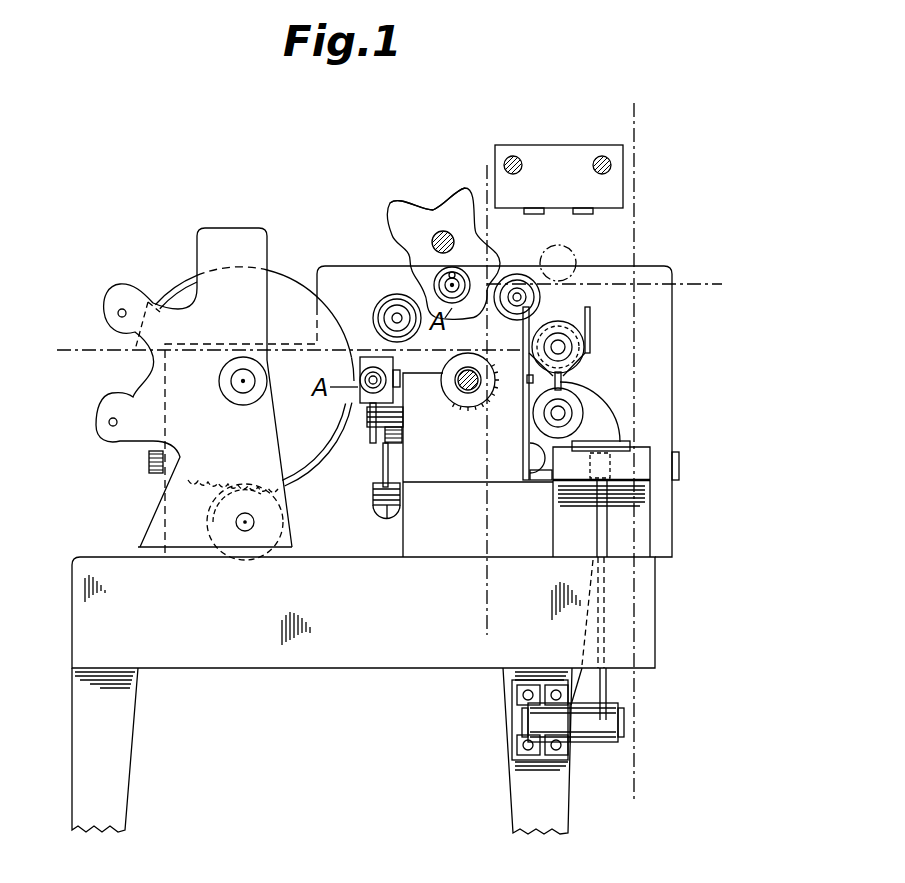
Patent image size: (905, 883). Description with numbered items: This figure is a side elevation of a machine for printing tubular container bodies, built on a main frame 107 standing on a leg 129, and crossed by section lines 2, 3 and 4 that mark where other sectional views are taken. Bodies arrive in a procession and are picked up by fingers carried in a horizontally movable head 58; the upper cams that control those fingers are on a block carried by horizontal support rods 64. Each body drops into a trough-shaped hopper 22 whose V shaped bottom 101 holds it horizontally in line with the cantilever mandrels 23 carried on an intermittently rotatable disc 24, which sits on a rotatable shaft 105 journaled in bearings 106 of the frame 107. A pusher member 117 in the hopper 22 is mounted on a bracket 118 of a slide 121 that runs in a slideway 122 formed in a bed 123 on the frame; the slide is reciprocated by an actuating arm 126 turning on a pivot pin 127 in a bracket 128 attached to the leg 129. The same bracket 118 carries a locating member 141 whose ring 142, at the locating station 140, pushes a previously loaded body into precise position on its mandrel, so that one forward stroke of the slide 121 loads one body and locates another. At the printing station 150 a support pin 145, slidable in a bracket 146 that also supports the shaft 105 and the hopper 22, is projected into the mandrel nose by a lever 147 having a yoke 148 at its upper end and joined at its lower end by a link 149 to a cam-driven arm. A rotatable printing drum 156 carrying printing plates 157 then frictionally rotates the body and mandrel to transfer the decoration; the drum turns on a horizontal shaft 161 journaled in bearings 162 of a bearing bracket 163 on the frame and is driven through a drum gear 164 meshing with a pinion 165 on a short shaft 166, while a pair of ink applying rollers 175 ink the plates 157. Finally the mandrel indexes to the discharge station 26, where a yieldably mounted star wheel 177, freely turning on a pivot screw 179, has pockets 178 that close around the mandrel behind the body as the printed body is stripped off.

The section line 2— 2 is at (63, 368).
The section line 3— 3 is at (608, 113).
The section line 4— 4 is at (462, 178).
The locating and holding hopper 22 is at (590, 308).
The cantilever mandrels 23 is at (390, 318).
The intermittently rotatable disc 24 is at (410, 288).
The discharge station 26 is at (396, 188).
The head 58 is at (554, 158).
The horizontal support rods 64 is at (514, 158).
The V shaped bottom 101 is at (572, 357).
The rotatable shaft 105 is at (468, 393).
The bearings 106 is at (454, 392).
The frame 107 is at (326, 268).
The pusher member 117 is at (568, 343).
The bracket 118 is at (578, 410).
The slide 121 is at (600, 447).
The slideway 122 is at (646, 446).
The bed 123 is at (650, 529).
The actuating arm 126 is at (607, 690).
The pivot pin 127 is at (624, 722).
The bracket 128 is at (515, 722).
The leg 129 is at (525, 800).
The locating station 140 is at (522, 436).
The locating member 141 is at (523, 462).
The ring 142 is at (524, 434).
The support pin 145 is at (296, 424).
The bracket 146 is at (432, 470).
The lever 147 is at (374, 430).
The yoke 148 is at (360, 380).
The link 149 is at (378, 513).
The printing station 150 is at (349, 357).
The rotatable printing drum 156 is at (290, 283).
The printing plates 157 is at (184, 278).
The horizontal shaft 161 is at (232, 380).
The bearings 162 is at (236, 391).
The bearing bracket 163 is at (230, 228).
The drum gear 164 is at (243, 483).
The pinion 165 is at (218, 503).
The short shaft 166 is at (245, 531).
The ink applying rollers 175 is at (112, 290).
The star wheel 177 is at (394, 213).
The pockets 178 is at (432, 202).
The pivot screw 179 is at (432, 242).